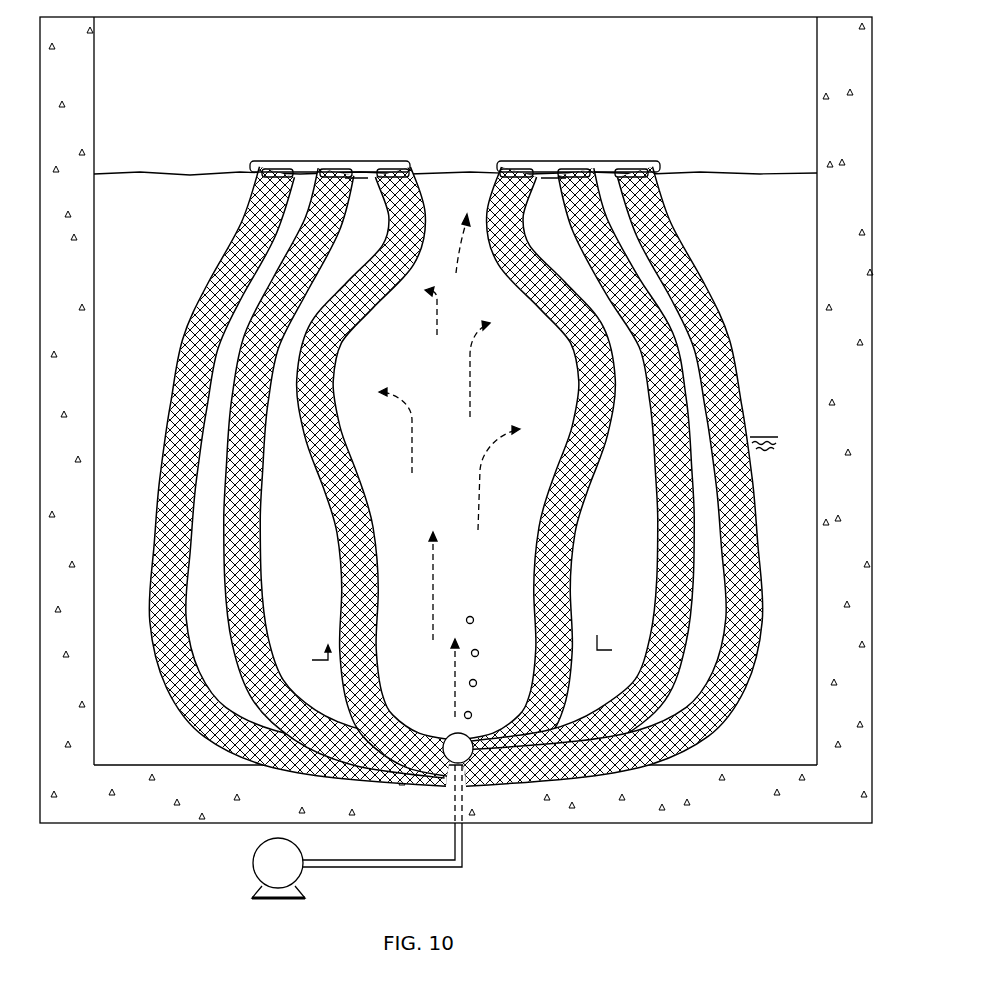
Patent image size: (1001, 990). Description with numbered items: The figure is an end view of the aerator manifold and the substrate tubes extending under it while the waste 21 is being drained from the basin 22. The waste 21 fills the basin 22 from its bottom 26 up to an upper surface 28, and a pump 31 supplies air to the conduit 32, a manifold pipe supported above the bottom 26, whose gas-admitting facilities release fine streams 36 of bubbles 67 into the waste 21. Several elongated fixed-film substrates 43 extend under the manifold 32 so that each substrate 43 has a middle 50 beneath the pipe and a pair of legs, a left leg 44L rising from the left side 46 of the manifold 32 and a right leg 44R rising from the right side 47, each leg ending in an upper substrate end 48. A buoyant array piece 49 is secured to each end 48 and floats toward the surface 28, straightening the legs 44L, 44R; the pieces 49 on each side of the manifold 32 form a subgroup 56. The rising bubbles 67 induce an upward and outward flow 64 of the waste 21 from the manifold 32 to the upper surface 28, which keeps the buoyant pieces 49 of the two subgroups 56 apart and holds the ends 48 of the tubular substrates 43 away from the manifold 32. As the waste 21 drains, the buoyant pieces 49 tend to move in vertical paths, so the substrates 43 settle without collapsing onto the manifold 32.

The waste 21 is at (768, 432).
The basin 22 is at (814, 52).
The bottom 26 is at (740, 765).
The upper surface 28 is at (443, 170).
The pump 31 is at (253, 863).
The conduit 32 is at (461, 748).
The fine streams 36 is at (451, 697).
The fixed-film substrate 43 is at (482, 470).
The left leg 44L is at (323, 253).
The right leg 44R is at (673, 221).
The left side 46 is at (307, 659).
The right side 47 is at (620, 647).
The upper substrate end 48 is at (352, 195).
The buoyant array piece 49 is at (282, 170).
The middle 50 is at (465, 775).
The subgroup 56 is at (332, 160).
The flow 64 is at (432, 318).
The bubbles 67 is at (466, 681).